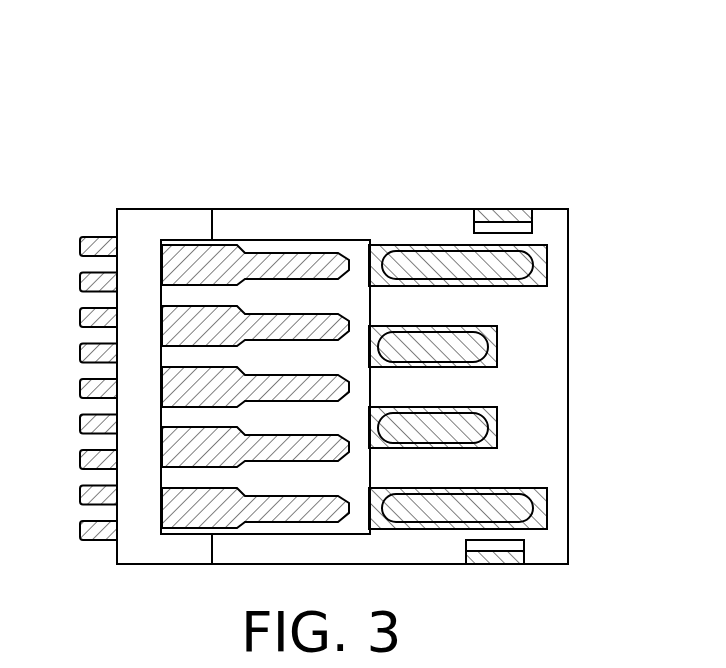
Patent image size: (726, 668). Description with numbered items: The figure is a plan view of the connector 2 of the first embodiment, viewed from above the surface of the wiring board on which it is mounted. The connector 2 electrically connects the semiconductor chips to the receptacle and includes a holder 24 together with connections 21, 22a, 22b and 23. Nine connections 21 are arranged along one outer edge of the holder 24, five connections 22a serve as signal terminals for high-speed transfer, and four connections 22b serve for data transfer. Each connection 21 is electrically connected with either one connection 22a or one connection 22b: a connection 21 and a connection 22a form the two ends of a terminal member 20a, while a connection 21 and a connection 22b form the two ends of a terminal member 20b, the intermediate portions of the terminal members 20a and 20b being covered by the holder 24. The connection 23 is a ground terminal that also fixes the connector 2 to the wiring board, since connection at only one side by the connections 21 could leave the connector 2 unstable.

The connector 2 is at (319, 287).
The terminal member 20a is at (265, 323).
The terminal member 20b is at (295, 297).
The connection 21 is at (95, 253).
The connection 22a is at (160, 165).
The connection 22b is at (458, 315).
The connection 23 is at (506, 213).
The holder 24 is at (550, 217).